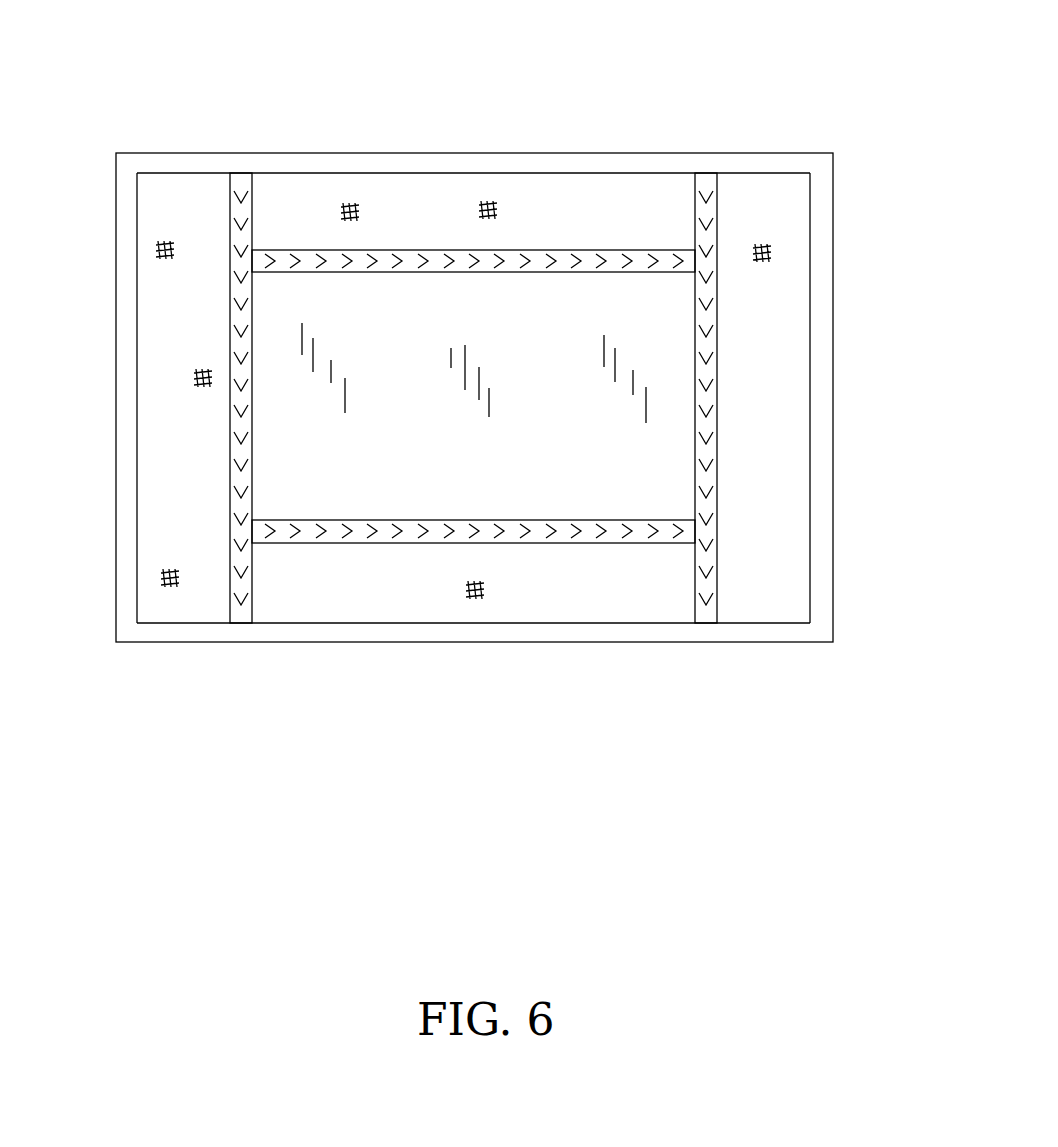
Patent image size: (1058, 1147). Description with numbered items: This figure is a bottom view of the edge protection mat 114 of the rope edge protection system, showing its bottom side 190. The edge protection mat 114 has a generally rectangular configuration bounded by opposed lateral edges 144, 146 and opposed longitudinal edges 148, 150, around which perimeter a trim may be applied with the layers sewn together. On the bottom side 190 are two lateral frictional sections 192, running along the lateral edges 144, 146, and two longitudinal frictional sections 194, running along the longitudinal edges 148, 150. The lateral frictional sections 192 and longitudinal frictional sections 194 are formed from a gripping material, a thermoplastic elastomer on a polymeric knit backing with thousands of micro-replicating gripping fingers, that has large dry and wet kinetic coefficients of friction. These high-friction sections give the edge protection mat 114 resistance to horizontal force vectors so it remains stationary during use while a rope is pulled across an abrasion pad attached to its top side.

The edge protection mat 114 is at (857, 122).
The lateral edge 144 is at (116, 357).
The lateral edge 146 is at (833, 359).
The longitudinal edge 148 is at (473, 153).
The longitudinal edge 150 is at (604, 642).
The bottom side 190 is at (410, 330).
The lateral frictional sections 192 is at (175, 467).
The longitudinal frictional sections 194 is at (587, 210).